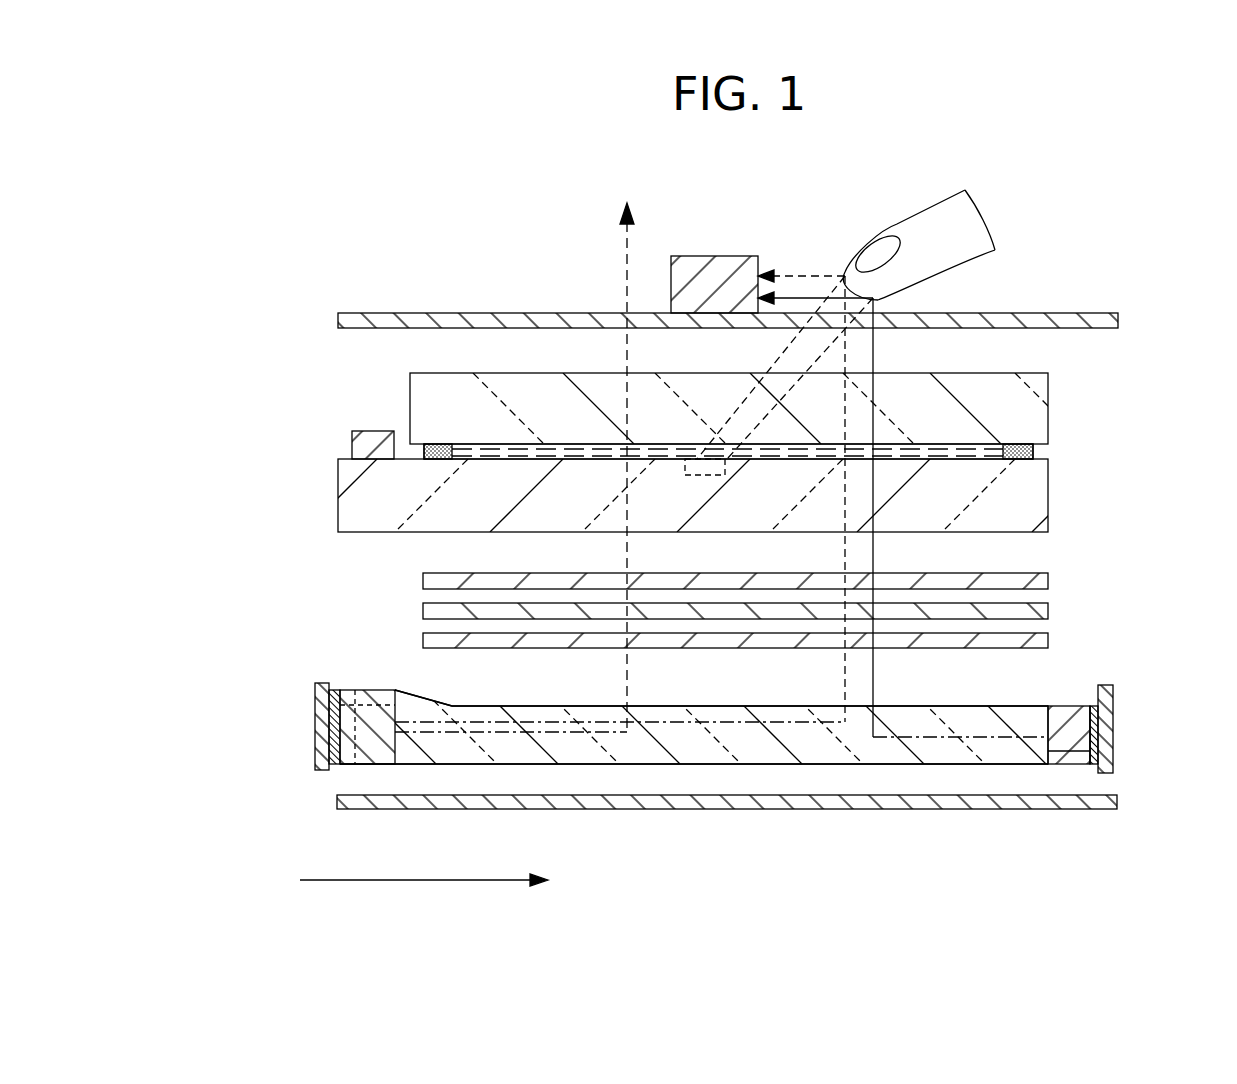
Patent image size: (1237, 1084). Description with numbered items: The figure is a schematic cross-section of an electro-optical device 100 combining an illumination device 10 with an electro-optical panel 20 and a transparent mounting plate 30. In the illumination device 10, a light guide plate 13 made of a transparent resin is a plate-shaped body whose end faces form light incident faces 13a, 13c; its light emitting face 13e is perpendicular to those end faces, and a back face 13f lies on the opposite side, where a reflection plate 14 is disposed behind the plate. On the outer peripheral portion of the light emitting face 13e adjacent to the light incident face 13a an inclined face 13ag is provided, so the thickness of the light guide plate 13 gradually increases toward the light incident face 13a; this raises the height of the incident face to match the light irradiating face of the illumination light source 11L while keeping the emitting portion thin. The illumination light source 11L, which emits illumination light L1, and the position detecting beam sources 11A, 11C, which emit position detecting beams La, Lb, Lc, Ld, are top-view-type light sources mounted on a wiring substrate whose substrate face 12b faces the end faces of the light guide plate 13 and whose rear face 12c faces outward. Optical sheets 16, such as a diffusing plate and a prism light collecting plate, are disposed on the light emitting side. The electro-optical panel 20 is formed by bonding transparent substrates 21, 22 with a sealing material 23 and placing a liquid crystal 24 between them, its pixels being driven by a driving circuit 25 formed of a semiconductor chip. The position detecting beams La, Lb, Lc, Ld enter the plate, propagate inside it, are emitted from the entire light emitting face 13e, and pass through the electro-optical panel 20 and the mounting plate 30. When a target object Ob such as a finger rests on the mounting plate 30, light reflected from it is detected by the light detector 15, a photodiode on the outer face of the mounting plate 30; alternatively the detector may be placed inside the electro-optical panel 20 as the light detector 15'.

The optical position detection device 100 is at (598, 135).
The illumination device 10 is at (689, 737).
The electro-optical panel 20 is at (663, 463).
The mounting plate 30 is at (338, 322).
The light detector 15 is at (714, 251).
The light detector 15' is at (708, 515).
The optical sheets 16 is at (1052, 573).
The transparent substrate 21 is at (1035, 505).
The transparent substrate 22 is at (1030, 413).
The sealing material 23 is at (1035, 452).
The liquid crystal 24 is at (477, 452).
The driving circuit 25 is at (348, 441).
The light guide plate 13 is at (757, 731).
The light incident face 13a is at (372, 700).
The inclined face 13ag is at (422, 697).
The light emitting face 13e is at (772, 706).
The back face 13f is at (720, 766).
The light incident face 13c is at (1090, 757).
The illumination light source 11L is at (322, 707).
The position detecting beam source 11A is at (322, 747).
The position detecting beam source 11C is at (1082, 738).
The substrate face 12b is at (1097, 692).
The rear face 12c is at (1113, 692).
The reflection plate 14 is at (1013, 805).
The illumination light L1 is at (625, 553).
The detection light beams La, Lb is at (812, 268).
The detection light beams Lc, Ld is at (873, 355).
The target object Ob is at (957, 259).